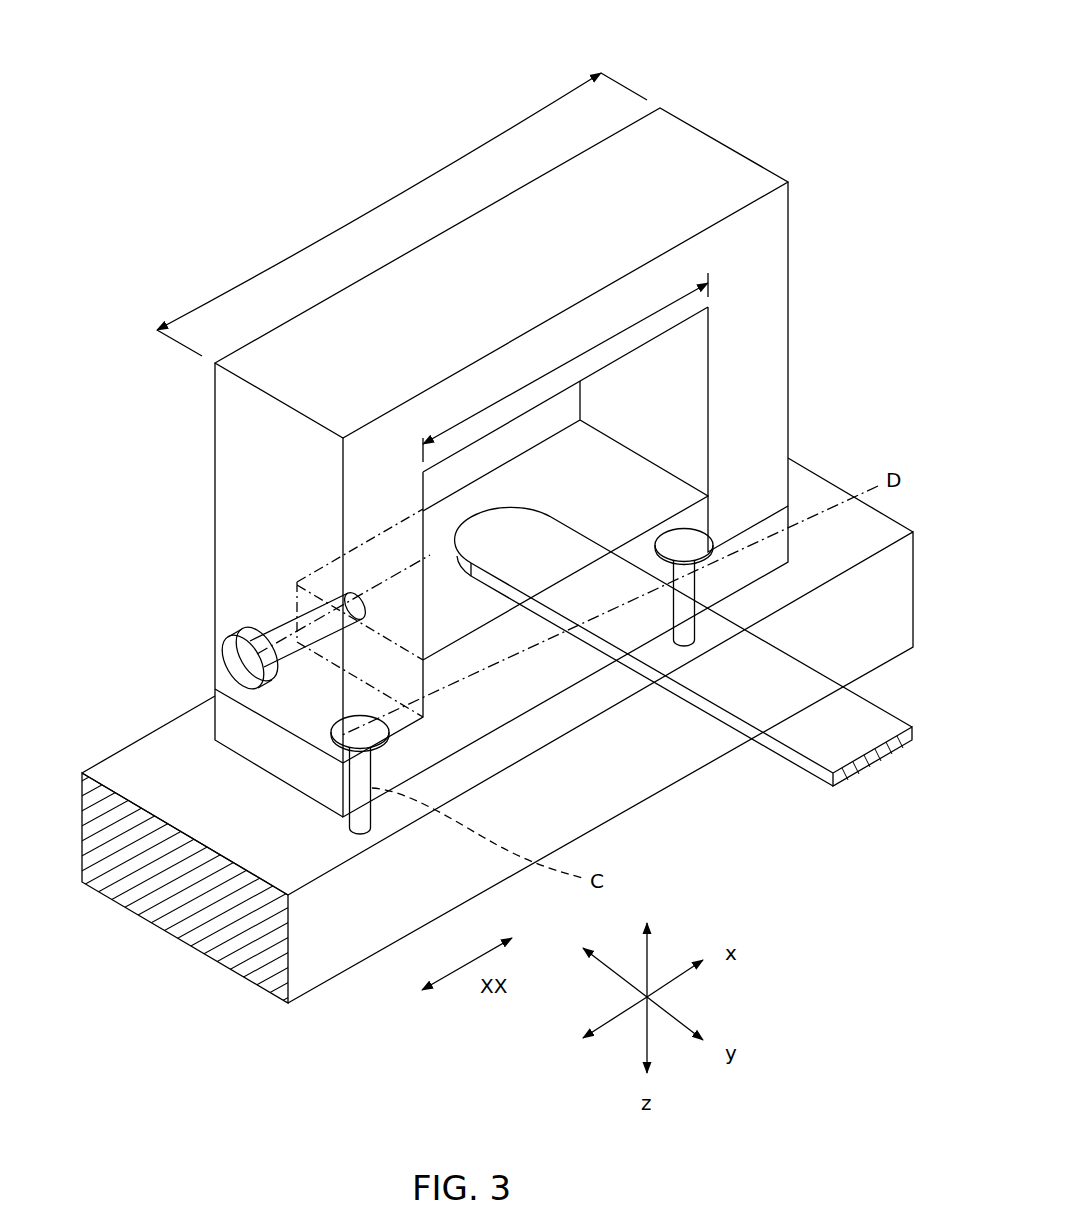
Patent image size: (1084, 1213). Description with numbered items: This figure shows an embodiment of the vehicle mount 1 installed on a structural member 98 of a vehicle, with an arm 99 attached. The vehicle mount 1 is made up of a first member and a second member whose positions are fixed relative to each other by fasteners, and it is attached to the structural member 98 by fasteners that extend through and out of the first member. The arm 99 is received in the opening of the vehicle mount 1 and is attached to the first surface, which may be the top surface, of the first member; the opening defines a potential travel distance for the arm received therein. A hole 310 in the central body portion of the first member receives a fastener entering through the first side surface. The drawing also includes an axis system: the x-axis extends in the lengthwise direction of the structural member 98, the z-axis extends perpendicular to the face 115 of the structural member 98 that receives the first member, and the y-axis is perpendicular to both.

The vehicle mount 1 is at (830, 125).
The hole 310 is at (320, 608).
The face 115 is at (173, 760).
The structural member 98 is at (486, 790).
The arm 99 is at (817, 745).